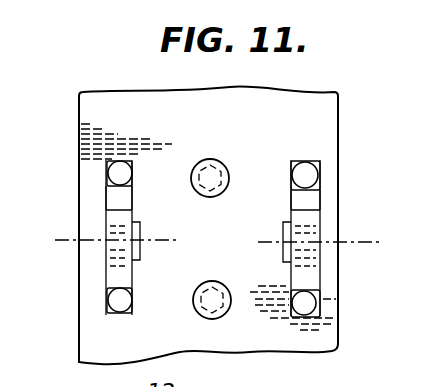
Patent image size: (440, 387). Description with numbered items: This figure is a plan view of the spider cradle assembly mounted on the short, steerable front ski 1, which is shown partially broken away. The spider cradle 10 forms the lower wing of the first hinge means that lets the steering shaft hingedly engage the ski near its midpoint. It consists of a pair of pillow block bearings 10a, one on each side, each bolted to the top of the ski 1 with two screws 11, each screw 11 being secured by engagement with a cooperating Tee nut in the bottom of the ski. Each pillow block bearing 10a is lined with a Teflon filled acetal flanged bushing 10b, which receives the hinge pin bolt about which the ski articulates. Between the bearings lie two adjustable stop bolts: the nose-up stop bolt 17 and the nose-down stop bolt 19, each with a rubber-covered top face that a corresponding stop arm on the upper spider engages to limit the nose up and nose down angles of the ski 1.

The steerable ski 1 is at (323, 125).
The spider cradle 10 is at (99, 288).
The pillow block bearing 10a is at (108, 200).
The flanged bushing 10b is at (106, 273).
The screw 11 is at (118, 173).
The nose-up stop bolt 17 is at (201, 315).
The nose-down stop bolt 19 is at (213, 157).